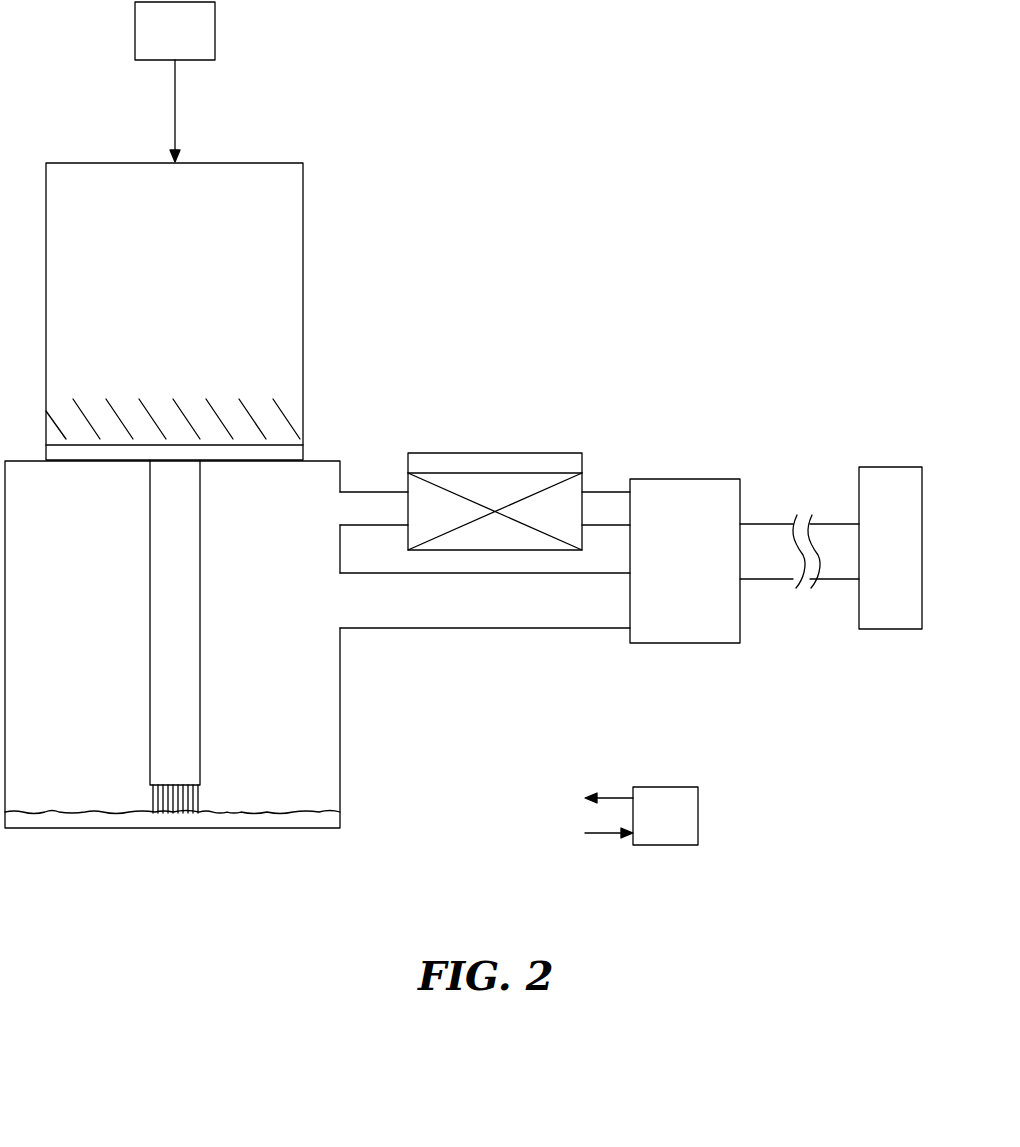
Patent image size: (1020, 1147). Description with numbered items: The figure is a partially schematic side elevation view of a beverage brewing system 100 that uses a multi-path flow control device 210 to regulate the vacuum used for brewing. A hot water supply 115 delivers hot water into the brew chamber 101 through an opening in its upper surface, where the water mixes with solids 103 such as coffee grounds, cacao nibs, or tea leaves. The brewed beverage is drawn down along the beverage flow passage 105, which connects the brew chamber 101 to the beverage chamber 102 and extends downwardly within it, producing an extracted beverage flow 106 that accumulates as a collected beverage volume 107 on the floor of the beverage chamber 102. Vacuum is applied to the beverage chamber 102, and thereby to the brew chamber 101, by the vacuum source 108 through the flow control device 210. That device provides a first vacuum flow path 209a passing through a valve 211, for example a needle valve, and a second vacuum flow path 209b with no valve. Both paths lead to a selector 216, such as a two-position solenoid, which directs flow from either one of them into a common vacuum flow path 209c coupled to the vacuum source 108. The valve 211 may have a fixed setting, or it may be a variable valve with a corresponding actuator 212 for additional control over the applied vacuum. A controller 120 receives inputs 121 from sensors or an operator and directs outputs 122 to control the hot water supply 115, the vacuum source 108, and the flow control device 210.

The beverage brewing system 100 is at (731, 109).
The brew chamber 101 is at (303, 212).
The beverage chamber 102 is at (340, 742).
The solids 103 is at (162, 412).
The beverage flow passage 105 is at (200, 635).
The extracted beverage flow 106 is at (217, 773).
The collected beverage volume 107 is at (305, 822).
The vacuum source 108 is at (900, 467).
The hot water supply 115 is at (217, 28).
The controller 120 is at (672, 786).
The inputs 121 is at (603, 836).
The outputs 122 is at (617, 795).
The first vacuum flow path 209a is at (372, 487).
The second vacuum flow path 209b is at (489, 630).
The common vacuum flow path 209c is at (778, 523).
The flow control device 210 is at (629, 396).
The valve 211 is at (585, 480).
The actuator 212 is at (503, 452).
The selector 216 is at (725, 480).